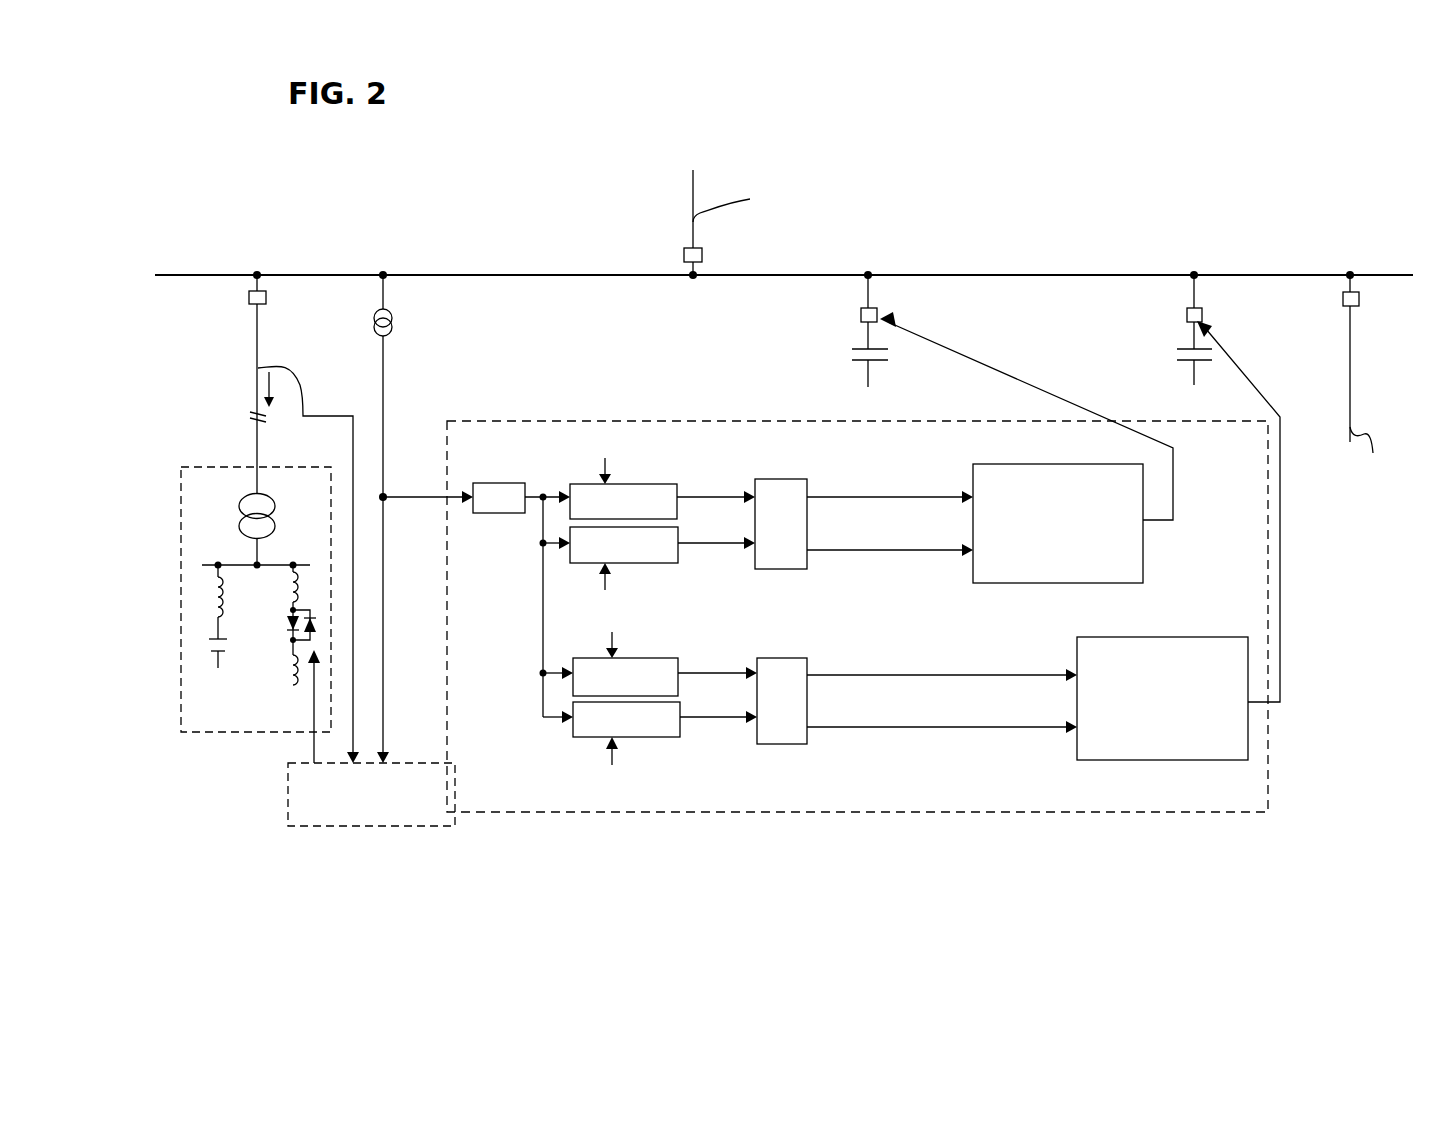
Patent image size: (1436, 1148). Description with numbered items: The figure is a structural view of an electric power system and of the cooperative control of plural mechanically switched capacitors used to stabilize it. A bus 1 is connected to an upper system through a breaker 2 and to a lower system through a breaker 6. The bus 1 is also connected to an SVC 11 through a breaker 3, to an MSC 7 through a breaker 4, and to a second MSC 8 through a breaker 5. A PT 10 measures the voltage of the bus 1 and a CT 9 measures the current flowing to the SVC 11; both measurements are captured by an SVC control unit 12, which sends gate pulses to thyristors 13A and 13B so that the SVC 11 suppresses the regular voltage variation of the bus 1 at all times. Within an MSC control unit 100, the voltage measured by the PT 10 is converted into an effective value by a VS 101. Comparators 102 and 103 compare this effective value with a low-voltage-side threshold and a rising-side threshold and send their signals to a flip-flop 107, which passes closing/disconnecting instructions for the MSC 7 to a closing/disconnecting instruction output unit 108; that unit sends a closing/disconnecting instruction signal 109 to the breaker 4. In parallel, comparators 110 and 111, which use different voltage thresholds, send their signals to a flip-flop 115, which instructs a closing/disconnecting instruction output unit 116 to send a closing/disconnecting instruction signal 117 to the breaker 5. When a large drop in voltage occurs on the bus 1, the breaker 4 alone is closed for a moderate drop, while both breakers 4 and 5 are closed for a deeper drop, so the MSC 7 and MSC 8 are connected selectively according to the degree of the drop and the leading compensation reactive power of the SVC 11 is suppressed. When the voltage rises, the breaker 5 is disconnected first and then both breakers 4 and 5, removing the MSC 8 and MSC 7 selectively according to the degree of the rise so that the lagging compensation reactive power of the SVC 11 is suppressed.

The bus 1 is at (535, 275).
The breaker 2 is at (703, 252).
The breaker 3 is at (266, 290).
The breaker 4 is at (875, 308).
The breaker 5 is at (1202, 308).
The breaker 6 is at (1359, 300).
The MSC 7 is at (850, 354).
The MSC 8 is at (1168, 355).
The current transformer CT 9 is at (258, 368).
The potential transformer PT 10 is at (383, 397).
The SVC 11 is at (182, 467).
The SVC control unit 12 is at (333, 820).
The thyristor 13A is at (278, 633).
The thyristor 13B is at (303, 647).
The MSC control unit 100 is at (604, 421).
The voltage detector (VS) 101 is at (503, 483).
The comparator 102 is at (567, 508).
The comparator 103 is at (568, 558).
The flip-flop 107 is at (778, 479).
The closing/disconnecting instruction output unit 108 is at (1000, 583).
The closing/disconnecting instruction signal 109 is at (1174, 512).
The comparator 110 is at (567, 682).
The comparator 111 is at (567, 728).
The flip-flop 115 is at (778, 744).
The closing/disconnecting instruction output unit 116 is at (1118, 762).
The closing/disconnecting instruction signal 117 is at (1280, 648).